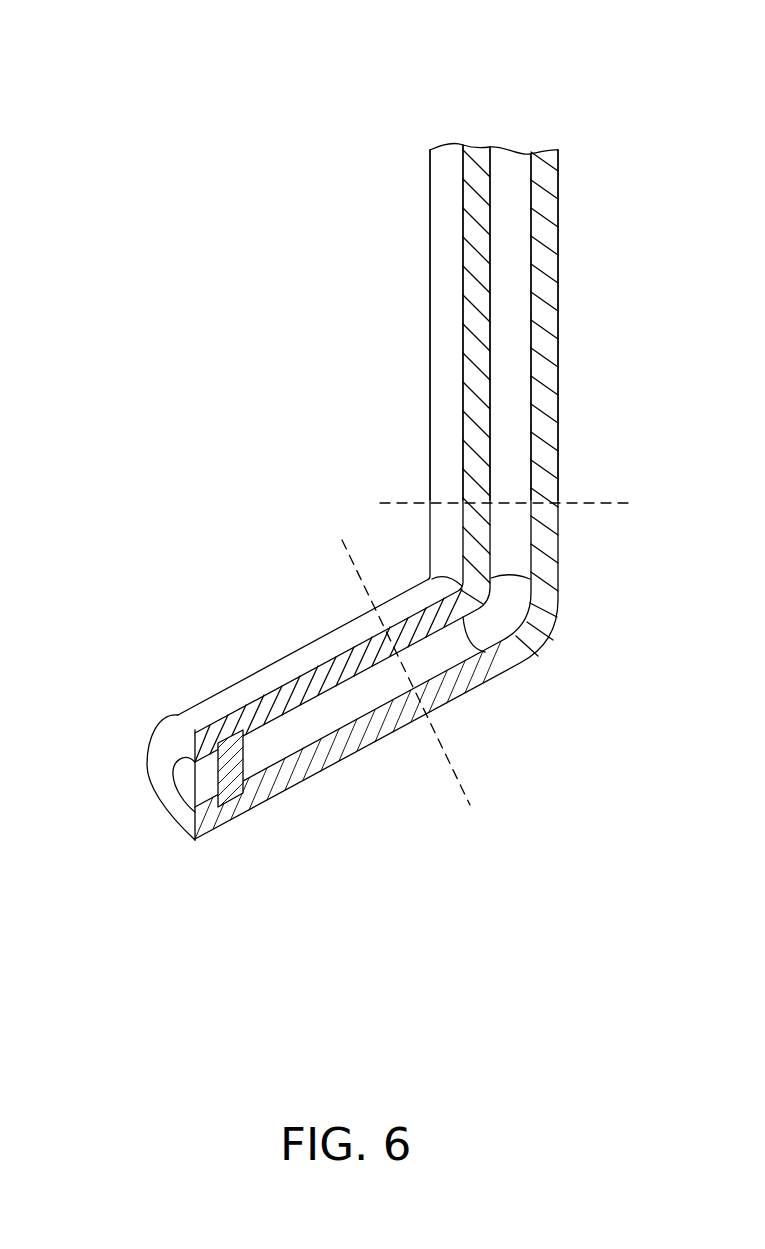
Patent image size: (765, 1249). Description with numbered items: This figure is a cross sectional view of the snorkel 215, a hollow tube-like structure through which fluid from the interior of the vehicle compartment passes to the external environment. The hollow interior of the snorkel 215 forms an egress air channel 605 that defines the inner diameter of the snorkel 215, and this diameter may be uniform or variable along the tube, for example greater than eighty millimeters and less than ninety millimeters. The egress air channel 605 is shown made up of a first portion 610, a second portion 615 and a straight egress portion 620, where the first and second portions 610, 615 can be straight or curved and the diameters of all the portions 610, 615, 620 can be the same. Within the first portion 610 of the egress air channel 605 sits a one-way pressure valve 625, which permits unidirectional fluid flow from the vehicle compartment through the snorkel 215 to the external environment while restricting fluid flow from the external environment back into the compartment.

The snorkel 215 is at (158, 105).
The egress air channel 605 is at (155, 790).
The first portion 610 is at (338, 718).
The second portion 615 is at (488, 627).
The straight egress portion 620 is at (510, 392).
The one-way pressure valve 625 is at (237, 738).